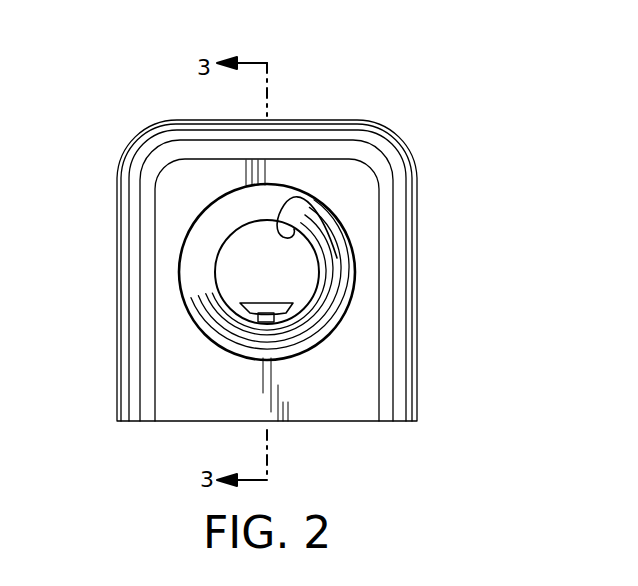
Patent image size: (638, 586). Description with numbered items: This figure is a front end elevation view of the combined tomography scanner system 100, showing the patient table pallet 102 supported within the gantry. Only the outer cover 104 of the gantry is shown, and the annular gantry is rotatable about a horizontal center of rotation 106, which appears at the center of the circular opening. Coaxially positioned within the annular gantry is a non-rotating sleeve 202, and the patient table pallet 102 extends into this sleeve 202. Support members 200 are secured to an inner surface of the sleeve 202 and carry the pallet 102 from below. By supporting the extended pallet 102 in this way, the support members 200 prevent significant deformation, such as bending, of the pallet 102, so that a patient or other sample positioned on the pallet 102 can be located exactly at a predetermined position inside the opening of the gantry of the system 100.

The combined tomography scanner system 100 is at (387, 98).
The patient table pallet 102 is at (292, 304).
The outer cover 104 is at (338, 259).
The horizontal center of rotation 106 is at (266, 273).
The support members 200 is at (265, 317).
The non-rotating sleeve 202 is at (302, 192).